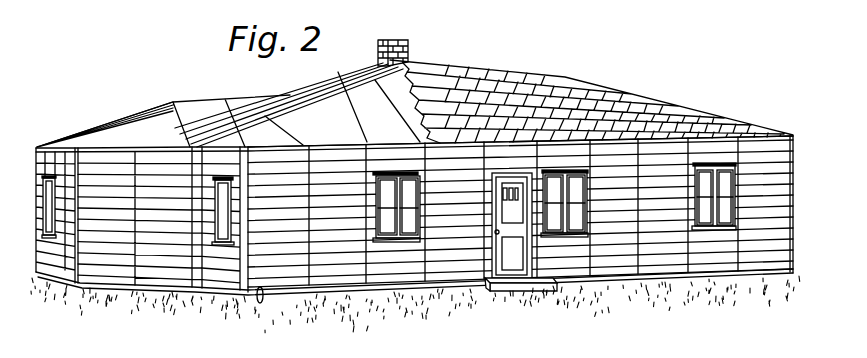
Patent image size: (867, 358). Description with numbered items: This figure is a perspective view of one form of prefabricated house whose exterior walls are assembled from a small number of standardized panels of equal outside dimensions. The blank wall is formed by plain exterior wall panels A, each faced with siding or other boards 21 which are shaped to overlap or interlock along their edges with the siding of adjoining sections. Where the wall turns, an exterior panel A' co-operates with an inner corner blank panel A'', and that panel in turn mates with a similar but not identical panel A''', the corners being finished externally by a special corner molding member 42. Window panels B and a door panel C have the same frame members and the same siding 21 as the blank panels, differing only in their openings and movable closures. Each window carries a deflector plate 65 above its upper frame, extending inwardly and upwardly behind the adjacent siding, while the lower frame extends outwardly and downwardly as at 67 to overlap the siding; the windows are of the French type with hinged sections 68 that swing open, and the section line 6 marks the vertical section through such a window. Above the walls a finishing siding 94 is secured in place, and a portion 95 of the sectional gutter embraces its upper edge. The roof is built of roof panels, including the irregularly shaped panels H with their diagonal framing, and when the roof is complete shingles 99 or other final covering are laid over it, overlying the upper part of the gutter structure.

The plain exterior wall panel A is at (415, 188).
The exterior wall panel A' is at (520, 244).
The inner corner exterior blank wall panel A'' is at (225, 250).
The mating corner wall panel A''' is at (140, 244).
The window panel B is at (50, 160).
The door panel C is at (535, 268).
The irregularly shaped roof panel H is at (140, 132).
The section line 6- 6 is at (376, 255).
The siding boards 21 is at (781, 250).
The corner molding member 42 is at (80, 273).
The deflector plate 65 is at (420, 172).
The lower frame extension 67 is at (421, 242).
The window section 68 is at (384, 190).
The finishing siding 94 is at (90, 156).
The gutter portion 95 is at (147, 157).
The shingles 99 is at (492, 77).